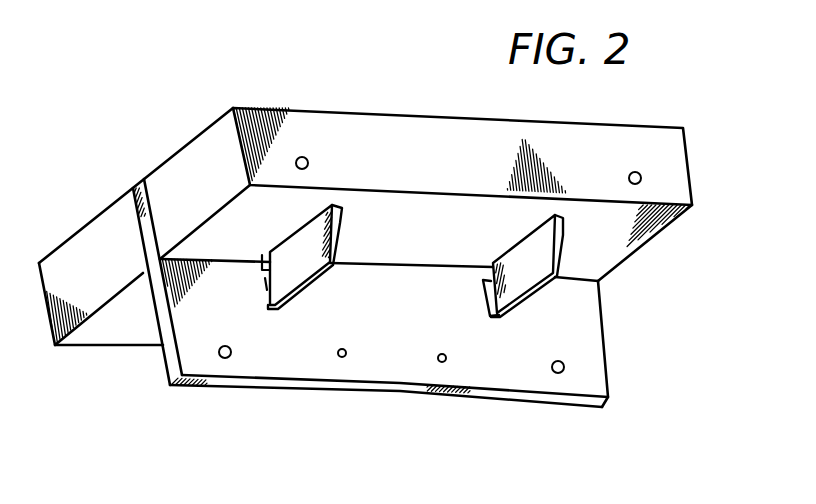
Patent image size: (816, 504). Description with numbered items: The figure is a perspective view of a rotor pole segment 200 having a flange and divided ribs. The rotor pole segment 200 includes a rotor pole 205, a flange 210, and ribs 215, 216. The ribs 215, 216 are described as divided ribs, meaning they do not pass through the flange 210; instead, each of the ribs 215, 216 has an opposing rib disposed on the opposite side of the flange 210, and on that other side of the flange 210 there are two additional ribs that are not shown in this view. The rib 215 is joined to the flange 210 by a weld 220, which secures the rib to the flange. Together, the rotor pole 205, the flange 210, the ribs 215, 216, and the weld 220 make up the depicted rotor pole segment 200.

The rotor pole segment 200 is at (137, 109).
The rotor pole 205 is at (315, 127).
The flange 210 is at (587, 322).
The rib 215 is at (288, 268).
The rib 216 is at (515, 277).
The weld 220 is at (268, 297).